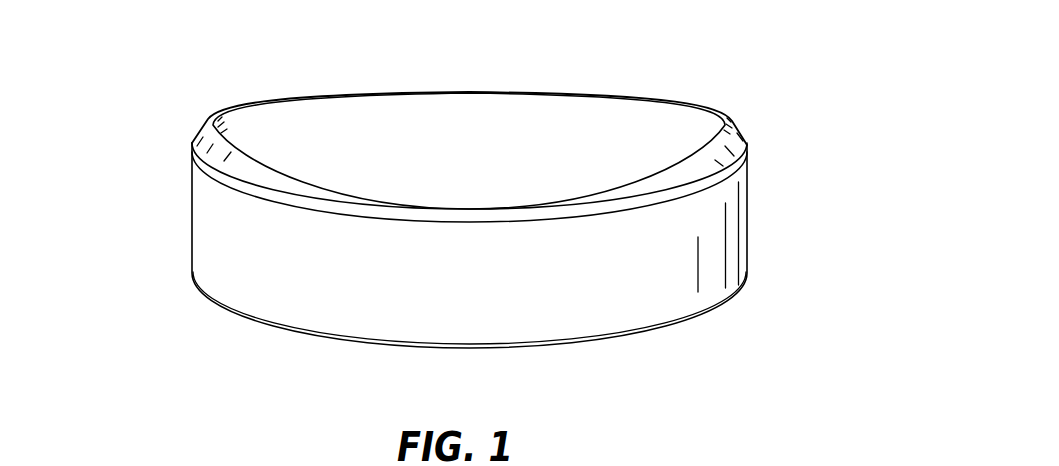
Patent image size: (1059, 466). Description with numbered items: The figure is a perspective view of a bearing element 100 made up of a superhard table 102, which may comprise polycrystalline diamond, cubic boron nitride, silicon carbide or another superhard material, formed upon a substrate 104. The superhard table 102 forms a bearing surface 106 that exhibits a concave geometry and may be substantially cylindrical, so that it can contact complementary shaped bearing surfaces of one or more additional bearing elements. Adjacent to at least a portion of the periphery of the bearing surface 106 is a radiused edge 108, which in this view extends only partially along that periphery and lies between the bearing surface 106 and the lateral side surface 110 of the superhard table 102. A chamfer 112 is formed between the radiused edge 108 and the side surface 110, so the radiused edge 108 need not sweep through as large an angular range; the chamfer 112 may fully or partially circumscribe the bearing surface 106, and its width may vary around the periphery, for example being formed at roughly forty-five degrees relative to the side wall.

The bearing element 100 is at (461, 235).
The superhard table 102 is at (430, 235).
The substrate 104 is at (525, 236).
The bearing surface 106 is at (463, 128).
The radiused edge 108 is at (211, 114).
The side surface 110 is at (747, 162).
The chamfer 112 is at (250, 167).